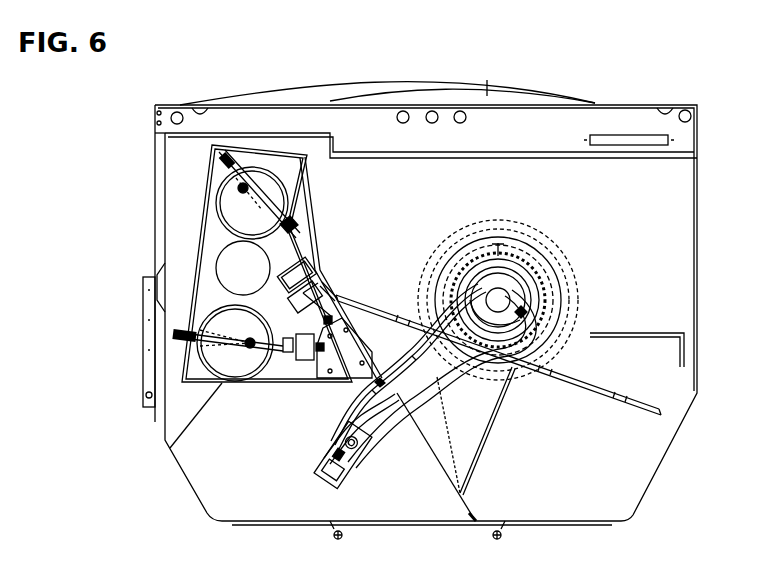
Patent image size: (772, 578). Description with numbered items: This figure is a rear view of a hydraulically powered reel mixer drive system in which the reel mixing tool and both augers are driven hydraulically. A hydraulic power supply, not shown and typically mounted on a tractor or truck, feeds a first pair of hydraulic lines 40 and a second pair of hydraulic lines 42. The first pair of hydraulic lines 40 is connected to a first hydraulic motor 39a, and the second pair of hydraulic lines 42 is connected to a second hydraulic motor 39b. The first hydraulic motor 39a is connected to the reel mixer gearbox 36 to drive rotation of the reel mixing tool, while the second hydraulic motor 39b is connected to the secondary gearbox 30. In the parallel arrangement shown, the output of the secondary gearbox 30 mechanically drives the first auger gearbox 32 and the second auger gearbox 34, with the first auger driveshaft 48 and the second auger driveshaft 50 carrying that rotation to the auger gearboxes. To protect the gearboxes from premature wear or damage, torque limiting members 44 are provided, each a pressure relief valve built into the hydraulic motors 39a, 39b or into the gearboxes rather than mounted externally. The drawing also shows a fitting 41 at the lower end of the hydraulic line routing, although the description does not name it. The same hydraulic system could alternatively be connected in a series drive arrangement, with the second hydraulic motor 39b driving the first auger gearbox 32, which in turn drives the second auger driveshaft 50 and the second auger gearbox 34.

The secondary gearbox 30 is at (364, 318).
The first auger gearbox 32 is at (262, 381).
The second auger gearbox 34 is at (300, 228).
The reel mixer gearbox 36 is at (536, 338).
The first hydraulic motor 39a is at (543, 313).
The second hydraulic motor 39b is at (322, 440).
The first pair of hydraulic lines 40 is at (444, 378).
The connector block 41 is at (361, 470).
The second pair of hydraulic lines 42 is at (393, 432).
The torque limiting members 44 is at (512, 308).
The first auger driveshaft 48 is at (304, 366).
The second auger driveshaft 50 is at (327, 262).